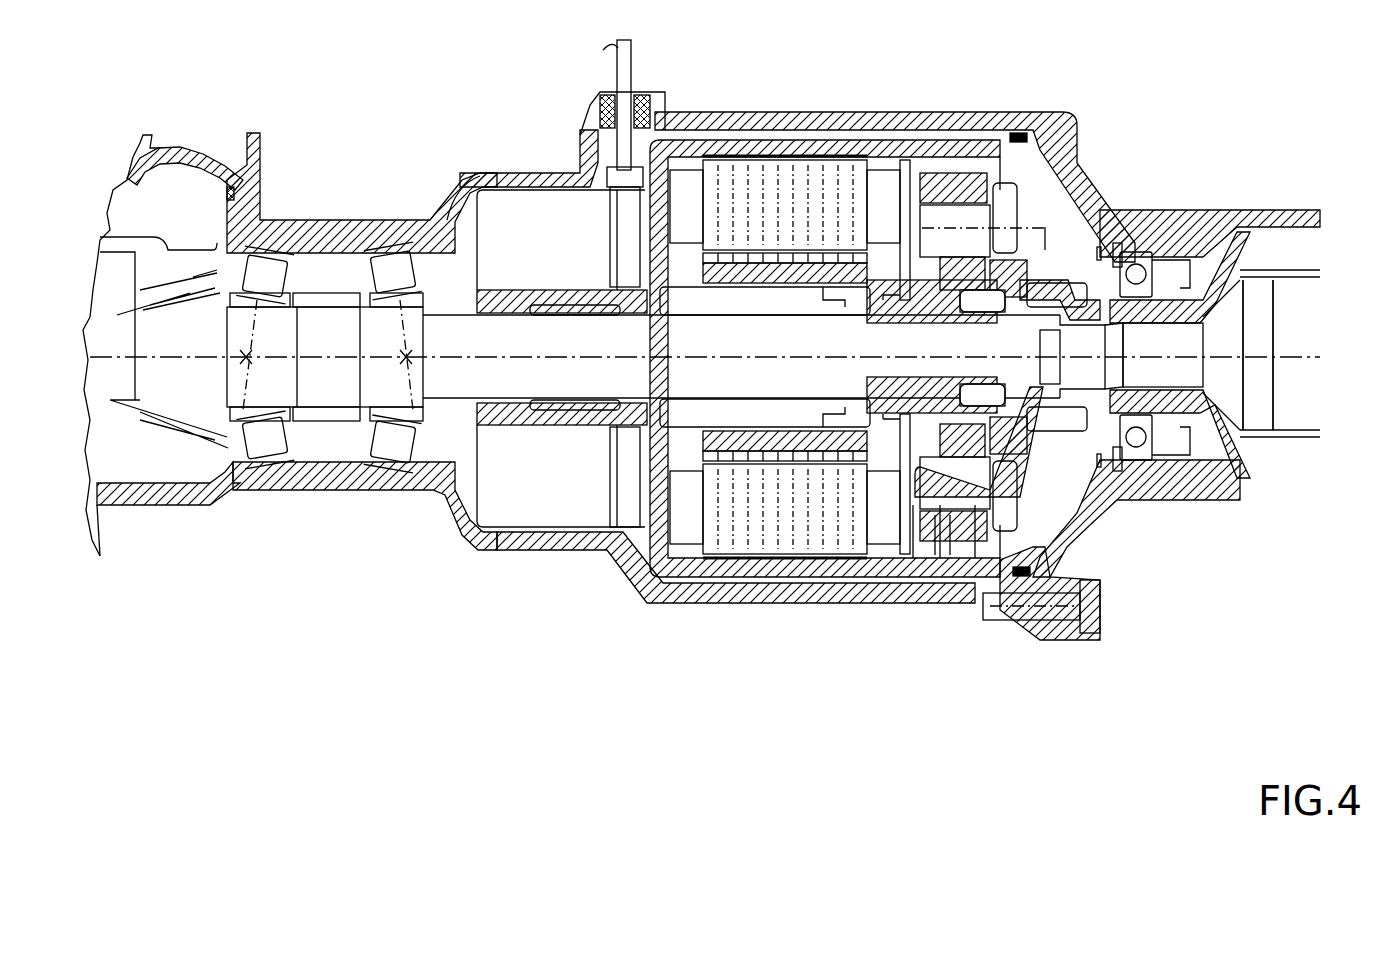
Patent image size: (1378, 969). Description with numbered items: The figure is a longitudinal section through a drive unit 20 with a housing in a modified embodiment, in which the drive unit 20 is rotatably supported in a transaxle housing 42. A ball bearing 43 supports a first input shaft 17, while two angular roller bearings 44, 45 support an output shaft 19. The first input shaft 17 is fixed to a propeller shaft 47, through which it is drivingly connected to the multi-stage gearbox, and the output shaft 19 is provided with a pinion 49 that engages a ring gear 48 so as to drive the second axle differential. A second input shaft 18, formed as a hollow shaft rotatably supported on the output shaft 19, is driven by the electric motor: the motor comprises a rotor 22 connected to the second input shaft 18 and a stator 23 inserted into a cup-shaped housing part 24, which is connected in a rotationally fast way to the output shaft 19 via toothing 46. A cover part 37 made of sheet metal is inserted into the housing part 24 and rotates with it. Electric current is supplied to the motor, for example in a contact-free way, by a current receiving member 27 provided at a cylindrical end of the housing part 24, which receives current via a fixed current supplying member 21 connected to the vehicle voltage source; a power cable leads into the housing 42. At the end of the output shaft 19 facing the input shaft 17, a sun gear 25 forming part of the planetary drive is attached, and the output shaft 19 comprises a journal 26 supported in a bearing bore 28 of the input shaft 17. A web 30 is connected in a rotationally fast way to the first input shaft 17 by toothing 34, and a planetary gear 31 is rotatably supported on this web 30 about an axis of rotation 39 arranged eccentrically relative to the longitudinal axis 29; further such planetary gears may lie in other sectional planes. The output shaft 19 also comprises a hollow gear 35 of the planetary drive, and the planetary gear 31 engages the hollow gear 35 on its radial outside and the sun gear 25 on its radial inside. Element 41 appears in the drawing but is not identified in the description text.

The first input shaft 17 is at (1235, 235).
The second input shaft 18 is at (903, 270).
The output shaft 19 is at (505, 330).
The drive unit 20 is at (1142, 110).
The current supplying member 21 is at (628, 200).
The rotor 22 is at (778, 270).
The stator 23 is at (752, 190).
The cup-shaped housing part 24 is at (718, 150).
The sun gear 25 is at (958, 400).
The journal 26 is at (1043, 420).
The current receiving member 27 is at (533, 250).
The bearing bore 28 is at (1066, 390).
The longitudinal axis 29 is at (1300, 357).
The web 30 is at (1008, 200).
The planetary gear 31 is at (978, 200).
The toothing 34 is at (1078, 290).
The hollow gear 35 is at (963, 555).
The cover part 37 is at (948, 185).
The axis of rotation 39 is at (1045, 227).
The electrical connector 41 is at (640, 120).
The transaxle housing 42 is at (370, 243).
The ball bearing 43 is at (1141, 255).
The angular roller bearing 44 is at (405, 260).
The angular roller bearing 45 is at (259, 320).
The toothing 46 is at (662, 300).
The propeller shaft 47 is at (1302, 272).
The ring gear 48 is at (170, 260).
The pinion 49 is at (200, 320).